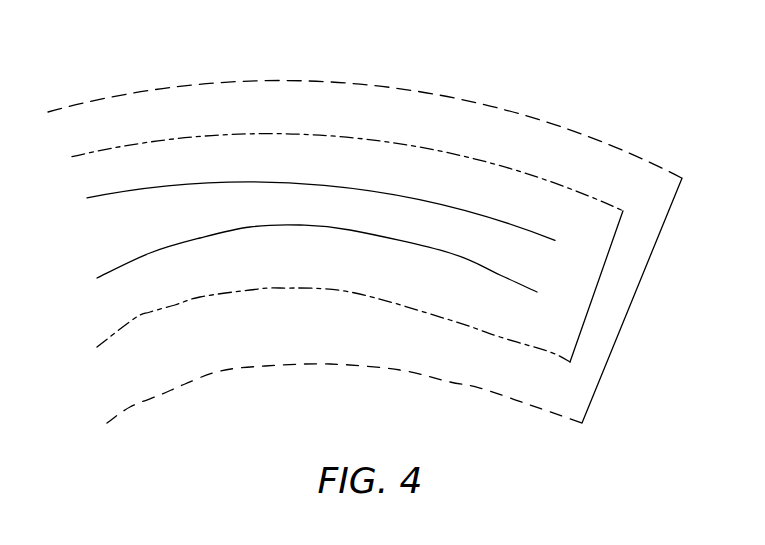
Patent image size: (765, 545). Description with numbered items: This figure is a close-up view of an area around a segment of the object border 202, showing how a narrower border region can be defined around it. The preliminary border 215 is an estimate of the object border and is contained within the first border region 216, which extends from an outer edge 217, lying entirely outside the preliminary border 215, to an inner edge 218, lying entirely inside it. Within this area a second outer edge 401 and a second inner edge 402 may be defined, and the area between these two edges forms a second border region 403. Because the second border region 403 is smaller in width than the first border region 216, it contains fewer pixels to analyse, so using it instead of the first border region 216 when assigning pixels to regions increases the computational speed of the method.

The outer edge 217 is at (392, 90).
The second outer edge 401 is at (155, 137).
The preliminary border 215 is at (513, 223).
The object border 202 is at (512, 280).
The second inner edge 402 is at (170, 305).
The inner edge 218 is at (345, 366).
The first border region 216 is at (605, 375).
The second border region 403 is at (595, 298).